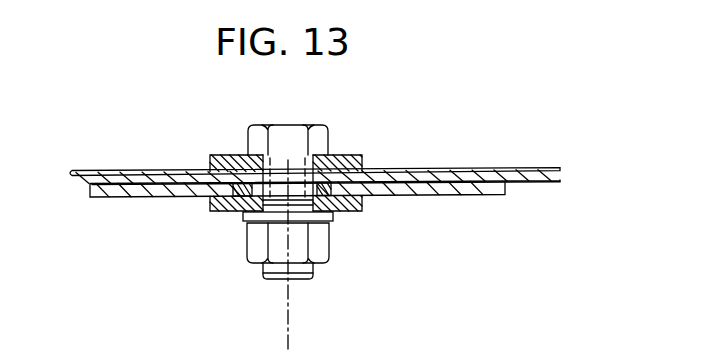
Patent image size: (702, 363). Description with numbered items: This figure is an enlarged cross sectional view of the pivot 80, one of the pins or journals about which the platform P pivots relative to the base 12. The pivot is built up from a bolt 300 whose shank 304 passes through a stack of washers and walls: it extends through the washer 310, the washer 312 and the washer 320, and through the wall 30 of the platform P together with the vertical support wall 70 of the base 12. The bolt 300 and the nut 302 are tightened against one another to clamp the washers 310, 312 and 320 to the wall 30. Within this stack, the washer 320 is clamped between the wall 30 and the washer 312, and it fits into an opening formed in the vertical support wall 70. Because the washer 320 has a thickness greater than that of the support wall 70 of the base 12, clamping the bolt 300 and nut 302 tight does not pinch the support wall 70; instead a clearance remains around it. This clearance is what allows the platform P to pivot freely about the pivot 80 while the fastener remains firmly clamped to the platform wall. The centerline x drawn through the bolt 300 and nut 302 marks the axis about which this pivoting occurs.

The bolt 300 is at (233, 123).
The pivot 80 is at (339, 119).
The washer 310 is at (201, 160).
The shank 304 is at (308, 168).
The wall 30 is at (473, 170).
The washer 312 is at (363, 205).
The vertical support wall 70 is at (458, 194).
The nut 302 is at (327, 248).
The washer 320 is at (233, 208).
The base 12 is at (122, 207).
The platform P is at (68, 196).
The axis x is at (288, 300).